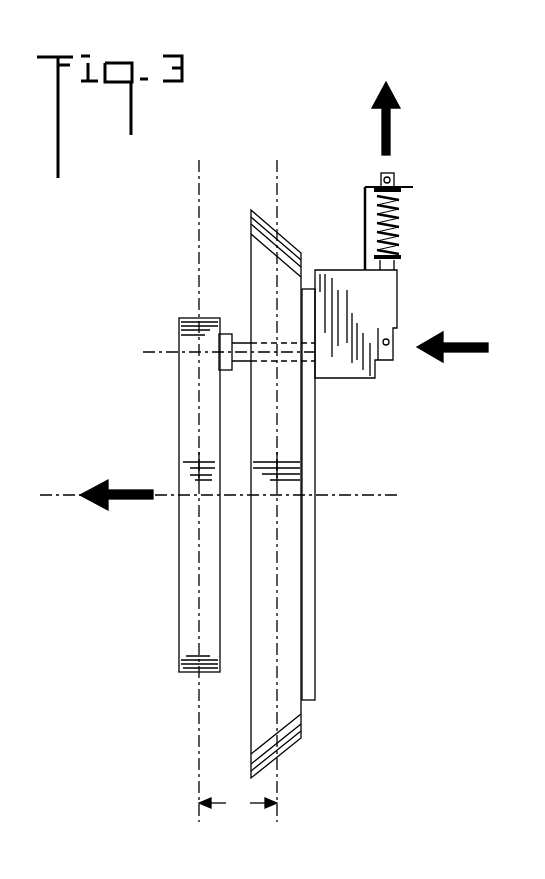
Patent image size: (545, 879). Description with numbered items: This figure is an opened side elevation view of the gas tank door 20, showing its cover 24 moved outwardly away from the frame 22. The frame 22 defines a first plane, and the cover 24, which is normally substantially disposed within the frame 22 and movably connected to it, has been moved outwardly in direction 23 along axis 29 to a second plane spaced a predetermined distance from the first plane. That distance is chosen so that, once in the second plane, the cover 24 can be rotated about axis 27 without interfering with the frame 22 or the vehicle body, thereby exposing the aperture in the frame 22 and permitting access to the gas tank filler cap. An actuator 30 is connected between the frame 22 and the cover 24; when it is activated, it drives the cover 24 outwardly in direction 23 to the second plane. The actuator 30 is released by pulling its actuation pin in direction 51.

The gas tank door 20 is at (150, 256).
The frame 22 is at (302, 724).
The direction 23 is at (470, 352).
The cover 24 is at (178, 662).
The axis 27 is at (160, 352).
The axis 29 is at (327, 498).
The actuator 30 is at (433, 249).
The direction 51 is at (390, 136).